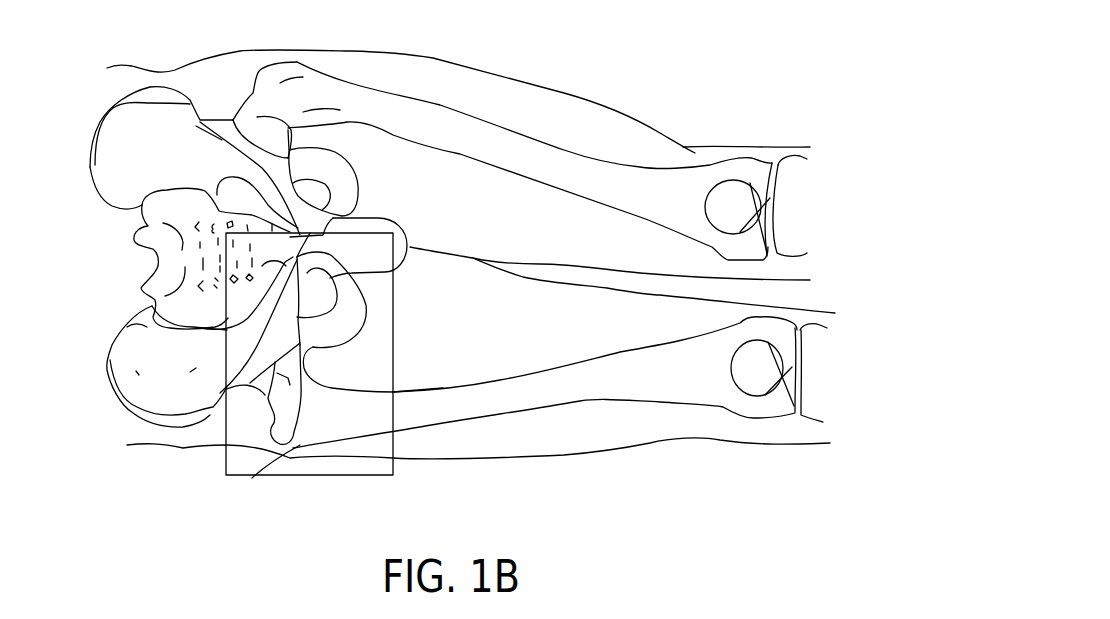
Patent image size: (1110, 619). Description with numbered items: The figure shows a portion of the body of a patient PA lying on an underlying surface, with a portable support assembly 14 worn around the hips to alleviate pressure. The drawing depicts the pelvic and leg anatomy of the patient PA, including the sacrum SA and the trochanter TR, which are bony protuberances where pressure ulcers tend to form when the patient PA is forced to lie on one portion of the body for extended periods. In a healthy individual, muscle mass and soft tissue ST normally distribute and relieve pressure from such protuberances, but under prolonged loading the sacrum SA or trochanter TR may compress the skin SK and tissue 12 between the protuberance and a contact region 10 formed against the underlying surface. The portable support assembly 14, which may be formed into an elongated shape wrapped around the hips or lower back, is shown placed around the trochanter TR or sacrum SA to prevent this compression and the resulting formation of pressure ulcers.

The contact region 10 is at (303, 458).
The tissue 12 is at (312, 447).
The portable support assembly 14 is at (375, 218).
The patient PA is at (583, 128).
The sacrum SA is at (143, 372).
The trochanter TR is at (249, 495).
The soft tissue ST is at (508, 432).
The skin SK is at (753, 440).